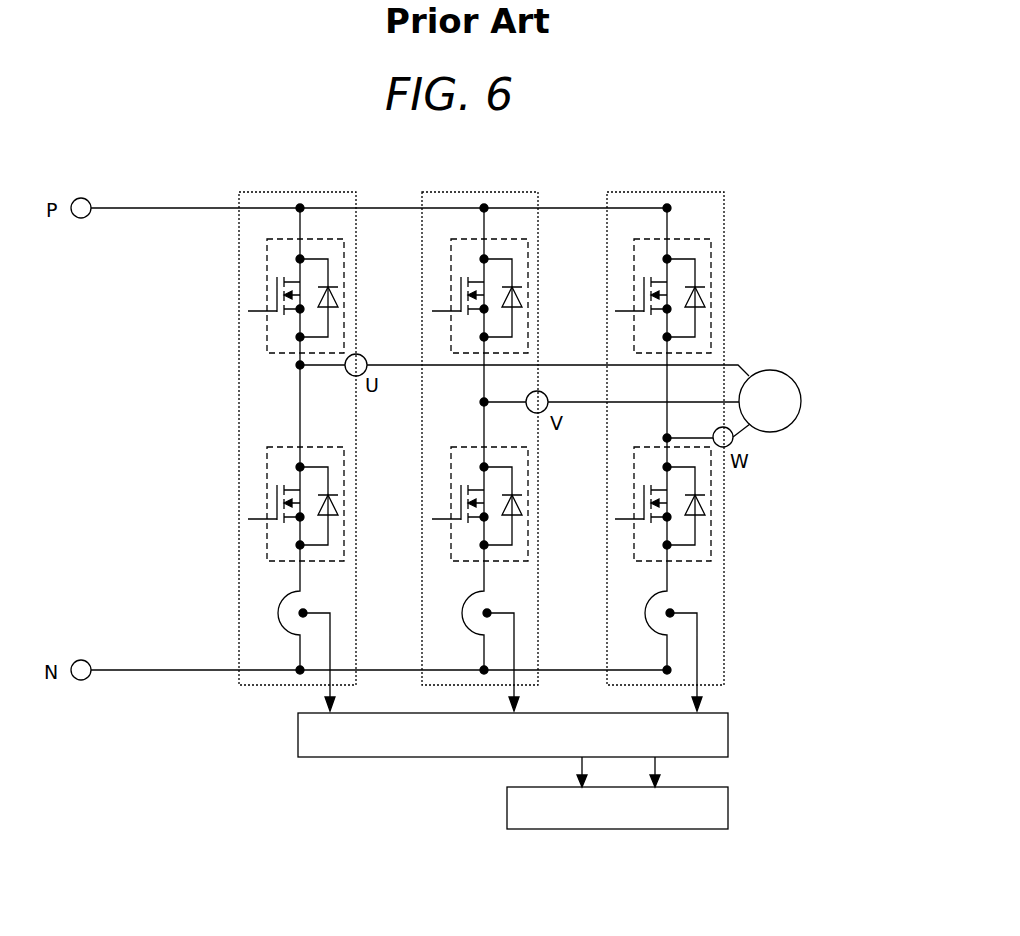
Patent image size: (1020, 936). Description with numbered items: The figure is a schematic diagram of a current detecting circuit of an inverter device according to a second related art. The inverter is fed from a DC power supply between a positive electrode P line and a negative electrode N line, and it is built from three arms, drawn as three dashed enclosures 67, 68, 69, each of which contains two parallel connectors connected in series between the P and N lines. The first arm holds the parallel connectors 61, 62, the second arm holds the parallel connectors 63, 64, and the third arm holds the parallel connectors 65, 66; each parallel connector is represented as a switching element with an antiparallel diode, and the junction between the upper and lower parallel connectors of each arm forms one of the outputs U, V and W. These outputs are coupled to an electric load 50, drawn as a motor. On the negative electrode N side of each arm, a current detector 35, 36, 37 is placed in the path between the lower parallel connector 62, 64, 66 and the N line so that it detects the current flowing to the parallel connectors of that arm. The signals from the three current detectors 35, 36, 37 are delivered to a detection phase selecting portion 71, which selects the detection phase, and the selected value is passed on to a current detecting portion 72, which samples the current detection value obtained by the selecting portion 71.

The current detector 35 is at (272, 618).
The current detector 36 is at (456, 618).
The current detector 37 is at (639, 618).
The electric load 50 is at (778, 372).
The parallel connector 61 is at (267, 272).
The parallel connector 62 is at (267, 479).
The parallel connector 63 is at (451, 270).
The parallel connector 64 is at (451, 479).
The parallel connector 65 is at (634, 270).
The parallel connector 66 is at (634, 479).
The U phase arm module 67 is at (256, 192).
The V phase arm module 68 is at (476, 192).
The W phase arm module 69 is at (668, 192).
The detection phase selecting portion 71 is at (728, 720).
The current detecting portion 72 is at (728, 795).